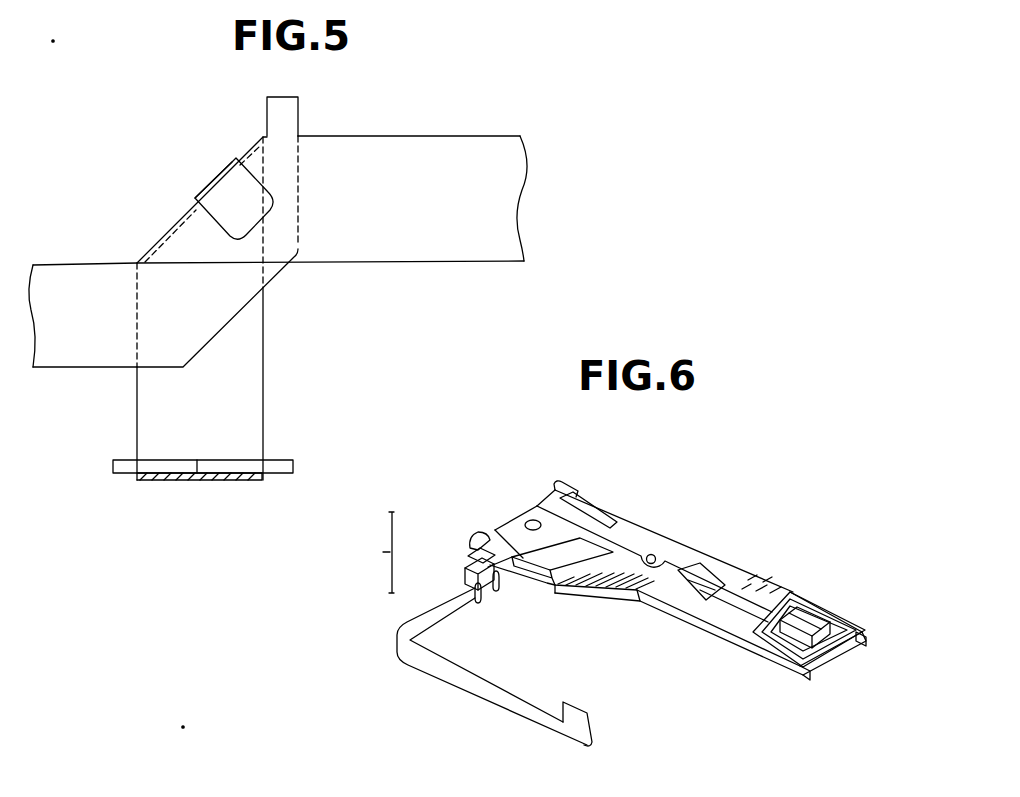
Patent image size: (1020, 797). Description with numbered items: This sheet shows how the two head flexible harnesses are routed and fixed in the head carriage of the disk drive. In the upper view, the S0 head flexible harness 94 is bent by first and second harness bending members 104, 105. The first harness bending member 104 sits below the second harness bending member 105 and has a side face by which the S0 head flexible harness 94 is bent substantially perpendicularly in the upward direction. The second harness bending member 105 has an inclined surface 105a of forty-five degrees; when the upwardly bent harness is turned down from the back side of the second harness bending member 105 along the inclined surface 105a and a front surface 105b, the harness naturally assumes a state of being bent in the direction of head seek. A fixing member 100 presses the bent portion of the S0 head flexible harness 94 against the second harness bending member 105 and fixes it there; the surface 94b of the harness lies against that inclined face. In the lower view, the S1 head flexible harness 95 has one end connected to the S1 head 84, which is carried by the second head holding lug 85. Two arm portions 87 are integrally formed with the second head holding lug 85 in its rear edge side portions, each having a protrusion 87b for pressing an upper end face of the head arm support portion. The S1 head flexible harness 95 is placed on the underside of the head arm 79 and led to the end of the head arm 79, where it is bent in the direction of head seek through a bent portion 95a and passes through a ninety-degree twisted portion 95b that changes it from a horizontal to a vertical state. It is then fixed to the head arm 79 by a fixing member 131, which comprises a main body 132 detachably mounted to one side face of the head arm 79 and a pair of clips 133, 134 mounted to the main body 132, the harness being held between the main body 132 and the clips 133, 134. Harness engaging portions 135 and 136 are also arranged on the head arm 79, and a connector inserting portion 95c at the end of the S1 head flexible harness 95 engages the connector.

In FIG. 6, the head arm 79 is at (767, 562).
In FIG. 6, the S1 head 84 is at (815, 622).
In FIG. 6, the second head holding lug 85 is at (668, 622).
In FIG. 6, the arm portion 87 is at (573, 497).
In FIG. 6, the protrusion 87b is at (480, 537).
In FIG. 5, the S0 head flexible harness 94 is at (265, 358).
In FIG. 5, the inclined surface 94b is at (250, 165).
In FIG. 6, the S1 head flexible harness 95 is at (632, 540).
In FIG. 6, the bent portion 95a is at (575, 530).
In FIG. 6, the twisted portion 95b is at (512, 563).
In FIG. 6, the connector inserting portion 95c is at (568, 728).
In FIG. 5, the fixing member 100 is at (203, 188).
In FIG. 5, the first harness bending member 104 is at (272, 458).
In FIG. 5, the second harness bending member 105 is at (97, 258).
In FIG. 5, the inclined surface 105a is at (253, 150).
In FIG. 5, the front surface 105b is at (276, 120).
In FIG. 6, the fixing member 131 is at (366, 552).
In FIG. 6, the main body 132 is at (477, 555).
In FIG. 6, the clip 133 is at (470, 585).
In FIG. 6, the clip 134 is at (470, 593).
In FIG. 6, the harness engaging portion 135 is at (710, 580).
In FIG. 6, the harness engaging portion 136 is at (658, 557).